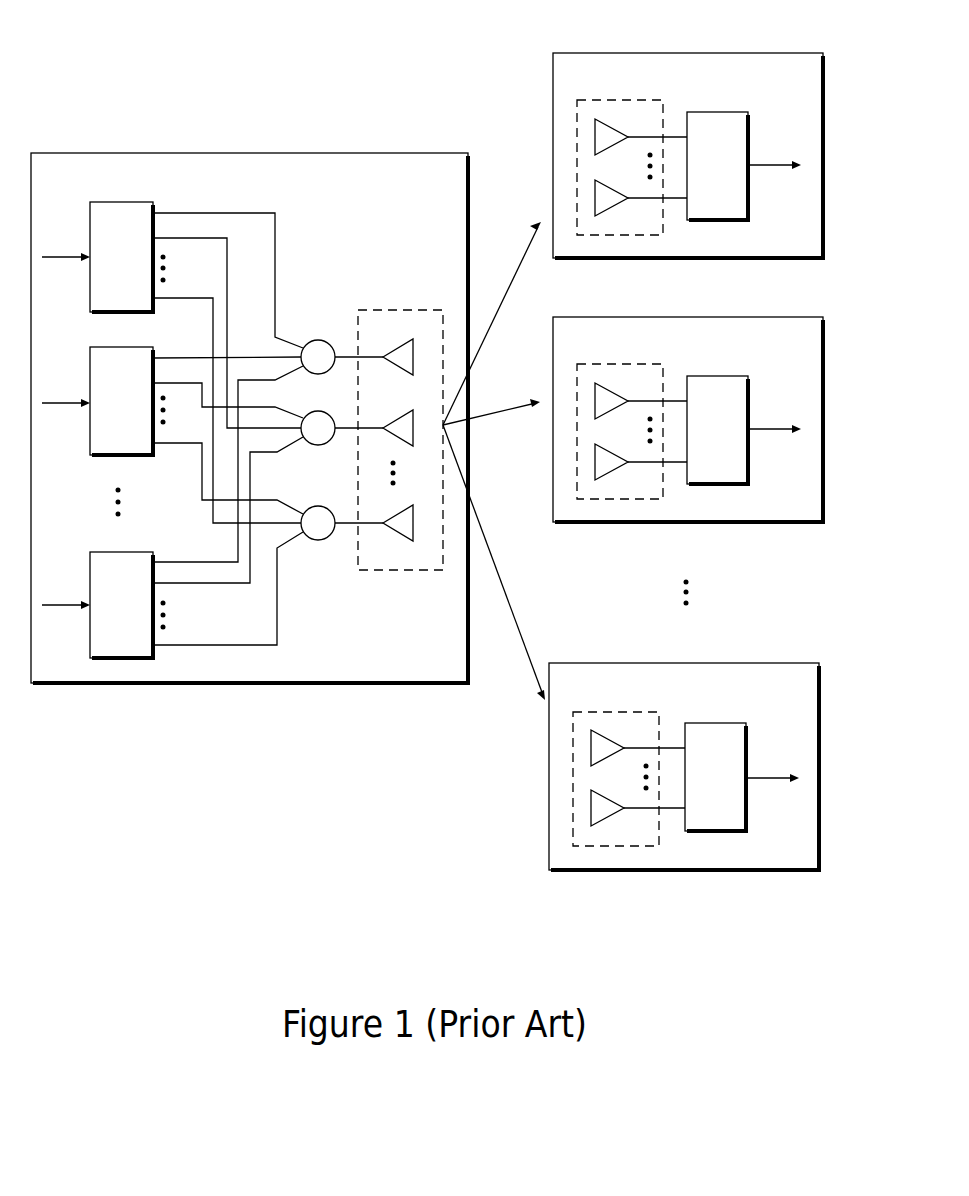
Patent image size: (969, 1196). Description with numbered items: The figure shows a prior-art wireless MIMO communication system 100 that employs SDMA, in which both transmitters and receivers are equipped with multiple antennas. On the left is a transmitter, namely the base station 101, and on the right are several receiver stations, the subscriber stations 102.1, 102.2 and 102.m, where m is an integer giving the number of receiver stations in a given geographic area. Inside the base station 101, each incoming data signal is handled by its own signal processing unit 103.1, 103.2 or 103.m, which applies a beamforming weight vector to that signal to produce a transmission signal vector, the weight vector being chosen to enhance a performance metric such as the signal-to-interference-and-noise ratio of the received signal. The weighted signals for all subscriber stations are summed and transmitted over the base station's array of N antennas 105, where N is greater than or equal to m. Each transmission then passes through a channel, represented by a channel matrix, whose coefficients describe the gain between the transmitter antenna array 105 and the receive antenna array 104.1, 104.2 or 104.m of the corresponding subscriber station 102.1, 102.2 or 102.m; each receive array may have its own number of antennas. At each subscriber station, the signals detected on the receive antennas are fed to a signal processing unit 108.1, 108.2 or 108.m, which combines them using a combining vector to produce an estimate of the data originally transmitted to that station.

The wireless MIMO communication system 100 is at (193, 38).
The transmitter 101 is at (270, 152).
The receiver station 102.1 is at (710, 51).
The receiver station 102.2 is at (710, 315).
The receiver station 102.m is at (708, 663).
The signal processing unit 103.1 is at (135, 314).
The signal processing unit 103.2 is at (127, 458).
The signal processing unit 103.m is at (127, 549).
The receive antenna array 104.1 is at (641, 98).
The receive antenna array 104.2 is at (641, 362).
The receive antenna array 104.m is at (637, 711).
The array of N antennas 105 is at (396, 309).
The signal processing unit 108.1 is at (727, 111).
The signal processing unit 108.2 is at (727, 375).
The signal processing unit 108.m is at (724, 723).